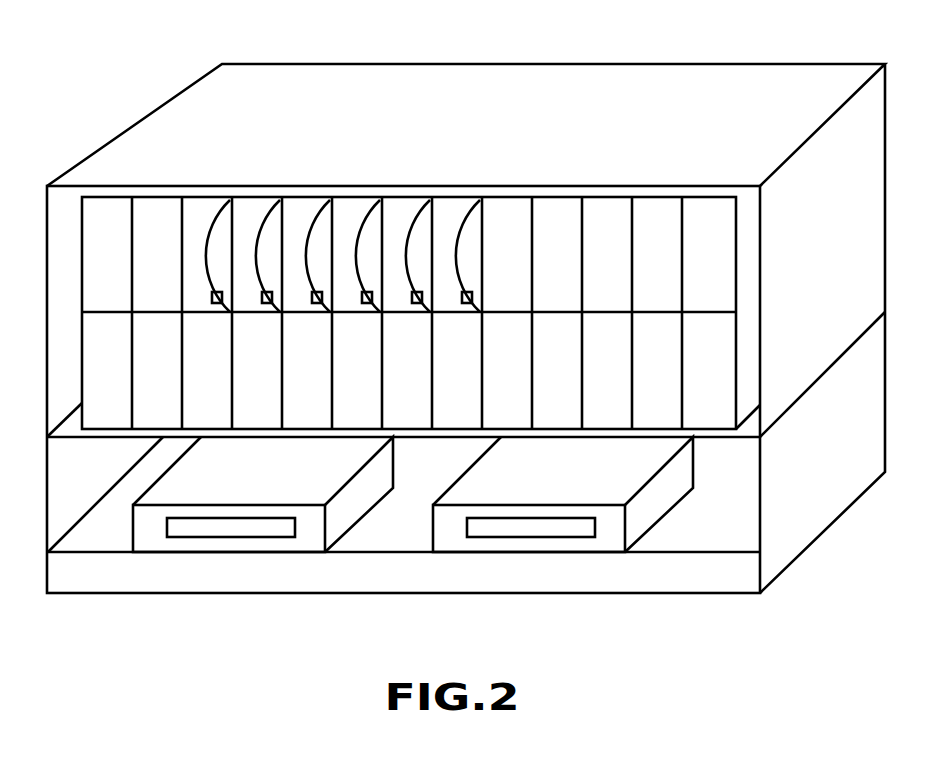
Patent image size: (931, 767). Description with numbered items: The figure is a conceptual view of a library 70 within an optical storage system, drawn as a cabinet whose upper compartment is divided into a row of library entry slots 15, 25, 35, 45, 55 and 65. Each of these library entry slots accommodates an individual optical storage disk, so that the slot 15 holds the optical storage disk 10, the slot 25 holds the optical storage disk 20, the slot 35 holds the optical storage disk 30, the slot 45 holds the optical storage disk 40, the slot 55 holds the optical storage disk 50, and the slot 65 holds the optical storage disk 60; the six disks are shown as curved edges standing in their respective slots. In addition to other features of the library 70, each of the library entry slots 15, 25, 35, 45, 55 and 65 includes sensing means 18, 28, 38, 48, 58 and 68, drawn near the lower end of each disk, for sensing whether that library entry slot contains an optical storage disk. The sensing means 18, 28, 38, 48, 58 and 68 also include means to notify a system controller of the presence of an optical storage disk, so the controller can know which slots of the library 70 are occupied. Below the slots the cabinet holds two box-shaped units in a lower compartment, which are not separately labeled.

The optical storage disk 10 is at (221, 230).
The library entry slot 15 is at (199, 213).
The sensing means 18 is at (217, 303).
The optical storage disk 20 is at (272, 230).
The library entry slot 25 is at (246, 213).
The sensing means 28 is at (267, 303).
The optical storage disk 30 is at (325, 230).
The library entry slot 35 is at (295, 213).
The sensing means 38 is at (317, 303).
The optical storage disk 40 is at (373, 230).
The library entry slot 45 is at (343, 213).
The sensing means 48 is at (367, 303).
The optical storage disk 50 is at (422, 230).
The library entry slot 55 is at (397, 213).
The sensing means 58 is at (417, 303).
The optical storage disk 60 is at (473, 230).
The library entry slot 65 is at (445, 213).
The sensing means 68 is at (467, 303).
The library 70 is at (710, 63).